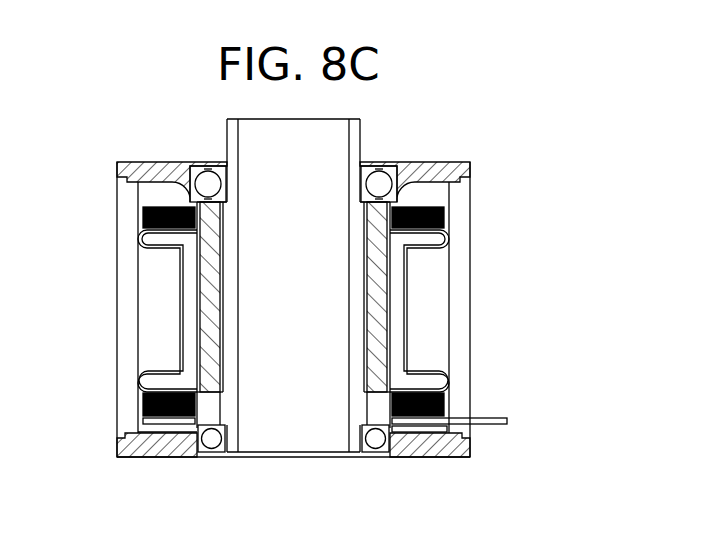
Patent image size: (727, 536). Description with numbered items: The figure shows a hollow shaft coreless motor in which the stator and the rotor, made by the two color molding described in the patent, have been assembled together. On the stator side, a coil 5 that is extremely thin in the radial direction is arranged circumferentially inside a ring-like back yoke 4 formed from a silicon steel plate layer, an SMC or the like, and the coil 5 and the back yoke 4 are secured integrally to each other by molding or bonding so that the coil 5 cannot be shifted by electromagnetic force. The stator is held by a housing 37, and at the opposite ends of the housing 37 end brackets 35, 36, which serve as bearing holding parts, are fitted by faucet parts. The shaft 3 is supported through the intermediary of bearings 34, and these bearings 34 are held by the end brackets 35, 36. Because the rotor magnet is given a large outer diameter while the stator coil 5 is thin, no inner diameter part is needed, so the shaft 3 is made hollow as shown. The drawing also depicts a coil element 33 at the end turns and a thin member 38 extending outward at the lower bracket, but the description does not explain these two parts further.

The shaft 3 is at (228, 135).
The back yoke 4 is at (447, 317).
The coil 5 is at (431, 382).
The coil 33 is at (438, 217).
The bearing 34 is at (380, 184).
The end bracket 35 is at (423, 161).
The end bracket 36 is at (169, 444).
The housing 37 is at (117, 285).
The flexible printed circuit board 38 is at (507, 427).